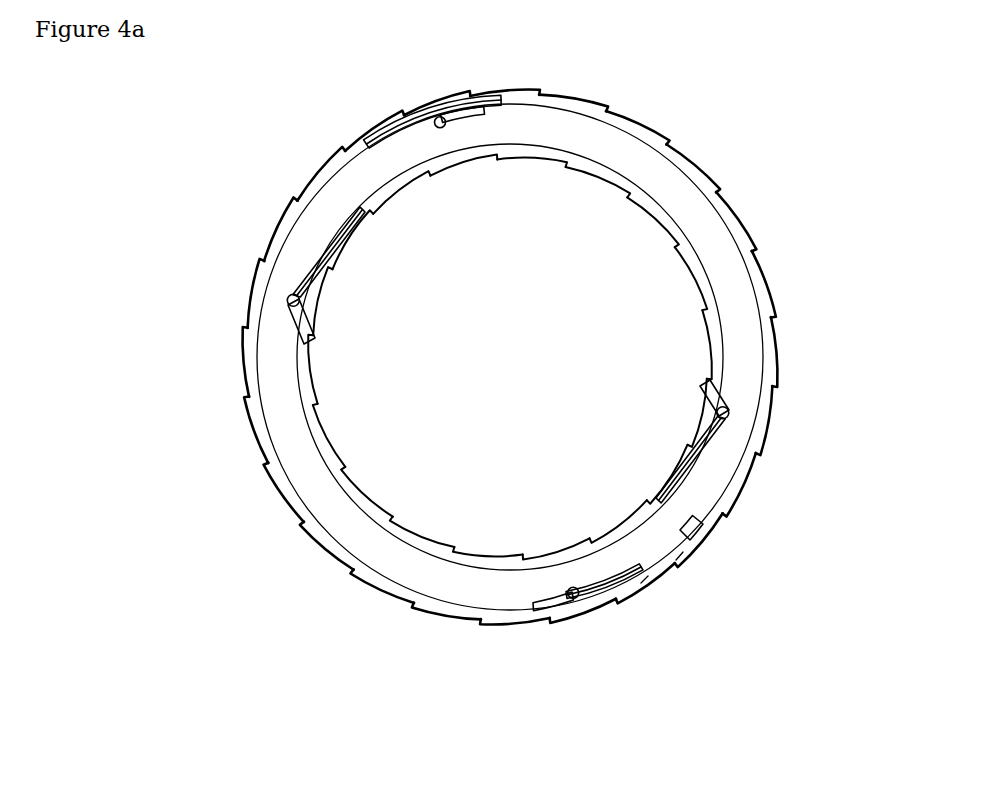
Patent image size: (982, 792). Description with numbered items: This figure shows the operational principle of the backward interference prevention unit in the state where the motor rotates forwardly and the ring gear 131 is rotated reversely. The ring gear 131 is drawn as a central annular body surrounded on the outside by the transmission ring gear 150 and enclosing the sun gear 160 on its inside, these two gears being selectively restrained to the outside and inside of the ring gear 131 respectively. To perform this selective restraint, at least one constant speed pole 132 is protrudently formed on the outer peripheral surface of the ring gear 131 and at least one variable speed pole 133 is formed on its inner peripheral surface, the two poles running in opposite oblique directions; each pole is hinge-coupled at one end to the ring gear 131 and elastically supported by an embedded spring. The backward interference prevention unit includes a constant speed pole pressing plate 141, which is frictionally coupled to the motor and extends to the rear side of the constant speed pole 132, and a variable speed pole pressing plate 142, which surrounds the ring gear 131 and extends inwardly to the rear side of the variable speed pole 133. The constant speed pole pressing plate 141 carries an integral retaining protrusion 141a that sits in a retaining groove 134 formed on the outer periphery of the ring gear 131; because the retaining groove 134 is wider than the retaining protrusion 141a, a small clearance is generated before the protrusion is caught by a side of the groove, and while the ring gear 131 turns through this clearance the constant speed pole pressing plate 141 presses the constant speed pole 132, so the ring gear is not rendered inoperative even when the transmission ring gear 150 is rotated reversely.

The ring gear 131 is at (722, 465).
The constant speed pole 132 is at (580, 613).
The variable speed pole 133 is at (298, 326).
The retaining groove 134 is at (695, 543).
The constant speed pole pressing plate 141 is at (645, 588).
The retaining protrusion 141a is at (690, 552).
The variable speed pole pressing plate 142 is at (710, 425).
The transmission ring gear 150 is at (383, 588).
The sun gear 160 is at (648, 218).